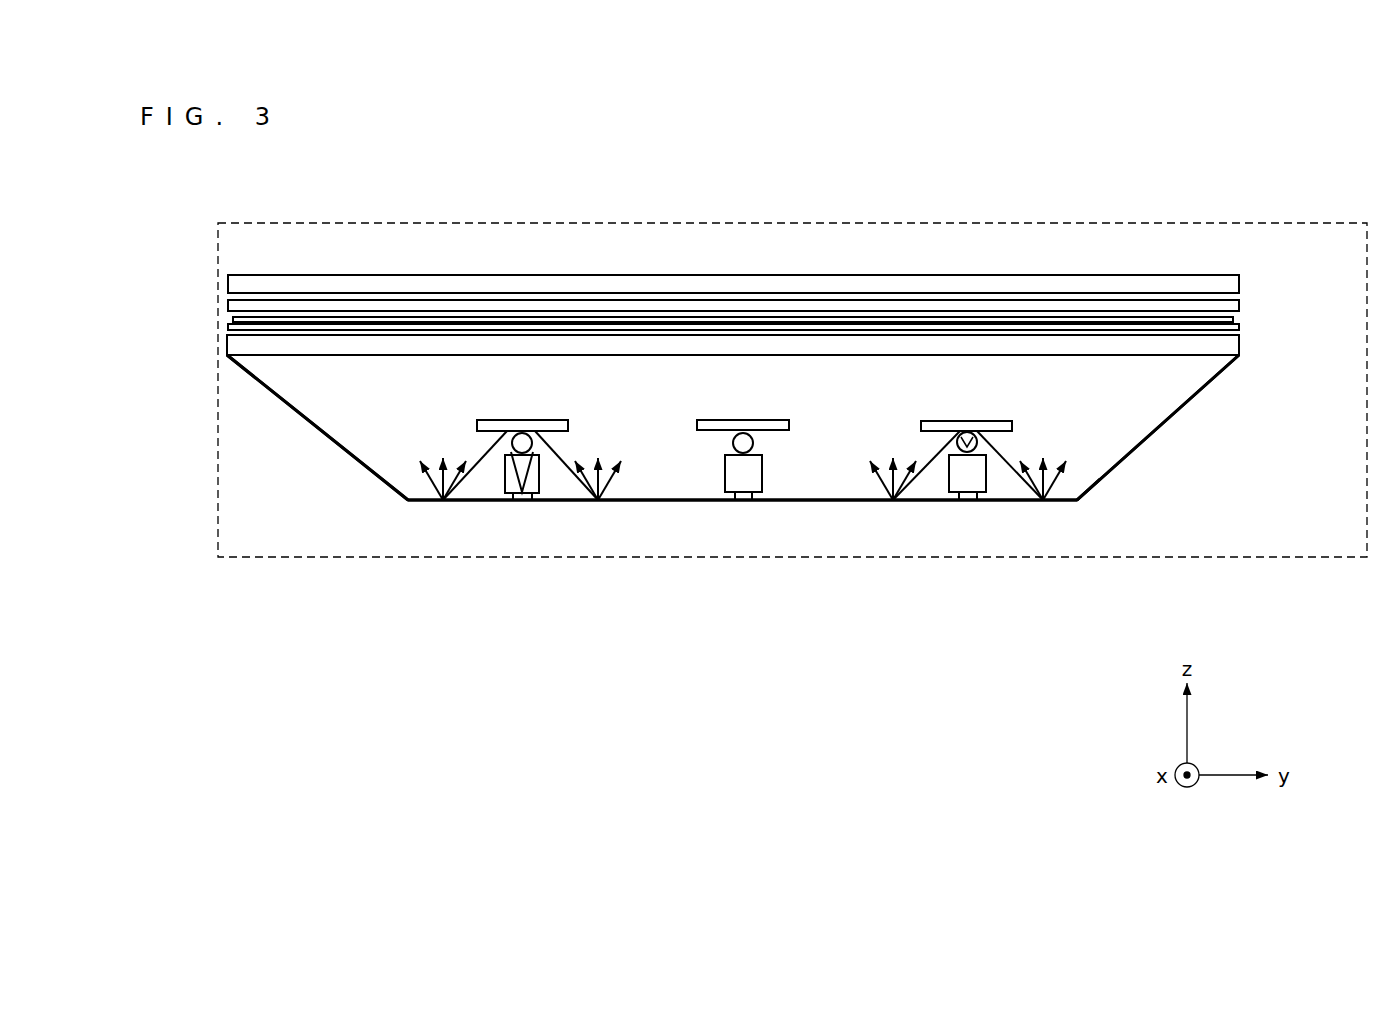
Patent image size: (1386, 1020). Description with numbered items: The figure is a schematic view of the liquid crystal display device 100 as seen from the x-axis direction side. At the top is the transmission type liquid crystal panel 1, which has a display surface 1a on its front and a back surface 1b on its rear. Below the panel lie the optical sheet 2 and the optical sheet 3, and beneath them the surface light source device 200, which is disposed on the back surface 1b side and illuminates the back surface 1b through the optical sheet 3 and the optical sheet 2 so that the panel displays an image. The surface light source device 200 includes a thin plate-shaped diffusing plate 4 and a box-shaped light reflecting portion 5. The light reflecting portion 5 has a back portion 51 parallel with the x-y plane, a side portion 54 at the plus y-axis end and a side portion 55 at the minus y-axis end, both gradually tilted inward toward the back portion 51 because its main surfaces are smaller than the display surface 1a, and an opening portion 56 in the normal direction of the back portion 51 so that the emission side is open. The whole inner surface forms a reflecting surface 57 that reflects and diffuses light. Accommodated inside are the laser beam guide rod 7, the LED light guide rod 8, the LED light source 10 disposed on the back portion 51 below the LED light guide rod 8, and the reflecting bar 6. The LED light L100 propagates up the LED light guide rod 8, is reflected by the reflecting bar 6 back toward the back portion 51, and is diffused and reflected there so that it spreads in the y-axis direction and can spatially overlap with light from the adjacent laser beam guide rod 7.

The liquid crystal display device 100 is at (1222, 222).
The liquid crystal panel 1 is at (1231, 274).
The display surface 1a is at (830, 275).
The back surface 1b is at (246, 292).
The optical sheet 2 is at (1239, 305).
The optical sheet 3 is at (1238, 328).
The diffusing plate 4 is at (1242, 357).
The light reflecting portion 5 is at (1140, 413).
The reflecting bar 6 is at (705, 431).
The laser beam guide rod 7 is at (730, 445).
The LED light guide rod 8 is at (758, 475).
The LED light source 10 is at (743, 500).
The back portion 51 is at (932, 502).
The side portion 54 is at (1122, 460).
The side portion 55 is at (372, 473).
The opening portion 56 is at (653, 372).
The reflecting surface 57 is at (1098, 467).
The surface light source device 200 is at (1229, 428).
The LED light L100 is at (490, 450).